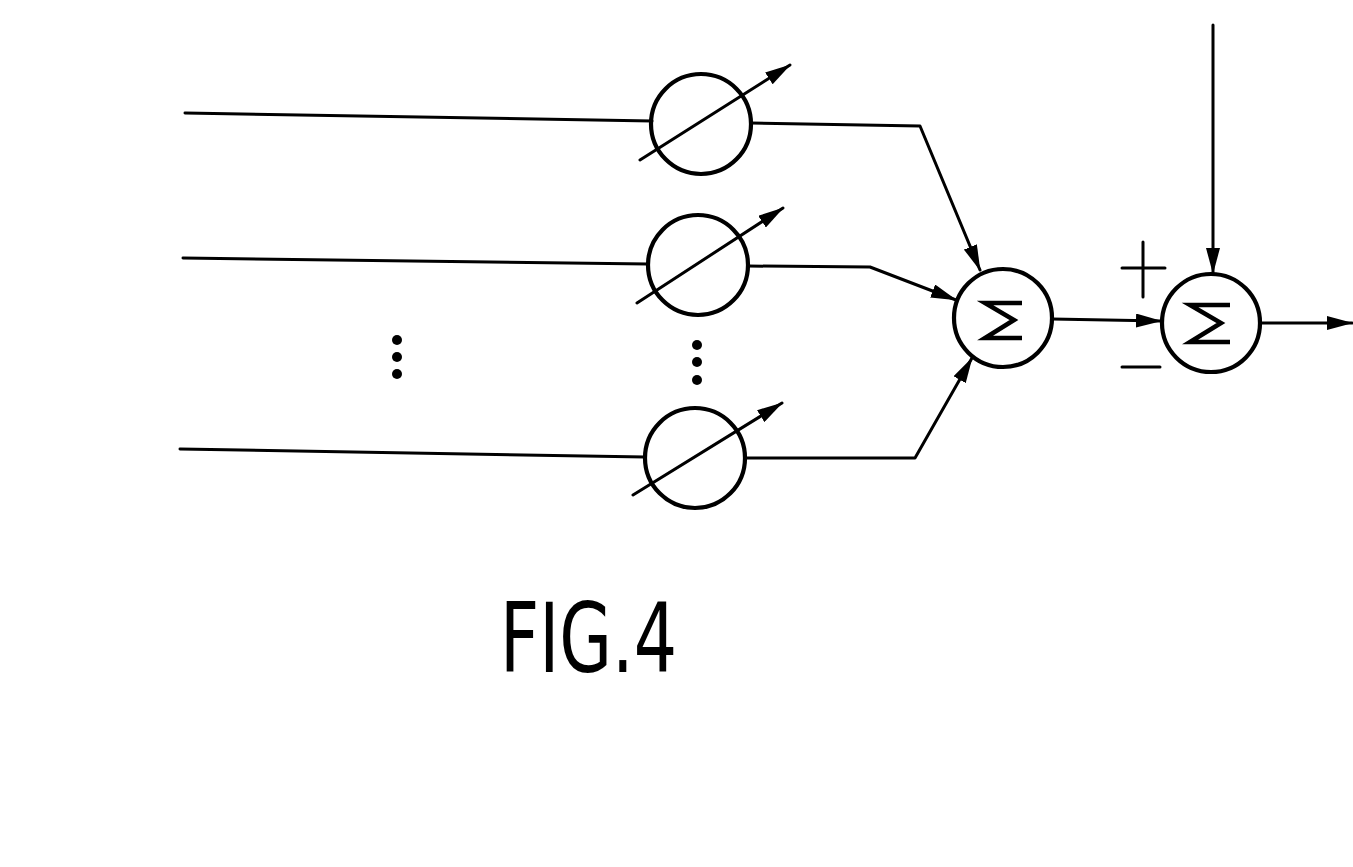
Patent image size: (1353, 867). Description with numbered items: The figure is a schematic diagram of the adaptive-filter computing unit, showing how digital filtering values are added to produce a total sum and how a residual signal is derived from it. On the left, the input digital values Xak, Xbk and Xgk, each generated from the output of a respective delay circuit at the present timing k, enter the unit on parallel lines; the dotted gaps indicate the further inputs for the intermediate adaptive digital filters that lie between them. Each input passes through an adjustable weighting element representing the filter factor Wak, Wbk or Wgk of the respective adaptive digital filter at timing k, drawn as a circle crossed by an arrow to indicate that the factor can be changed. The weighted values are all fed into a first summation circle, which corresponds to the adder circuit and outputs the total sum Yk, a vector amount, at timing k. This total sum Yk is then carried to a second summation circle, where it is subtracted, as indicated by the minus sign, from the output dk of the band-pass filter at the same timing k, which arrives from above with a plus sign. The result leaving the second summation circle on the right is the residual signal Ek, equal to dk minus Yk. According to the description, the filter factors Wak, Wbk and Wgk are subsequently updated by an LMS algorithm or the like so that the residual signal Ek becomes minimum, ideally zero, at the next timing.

The input digital value Xak is at (368, 115).
The input digital value Xbk is at (366, 260).
The input digital value Xgk is at (362, 452).
The filter factor Wak is at (685, 111).
The filter factor Wbk is at (678, 253).
The filter factor Wgk is at (677, 447).
The total sum Yk is at (1106, 295).
The band-pass filter output dk is at (1180, 149).
The residual signal Ek is at (1306, 285).